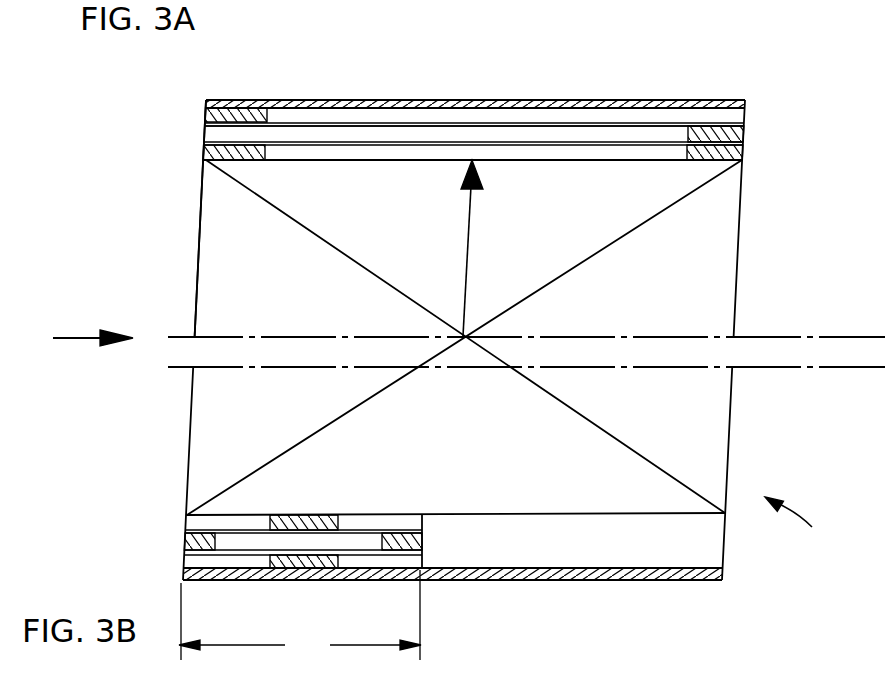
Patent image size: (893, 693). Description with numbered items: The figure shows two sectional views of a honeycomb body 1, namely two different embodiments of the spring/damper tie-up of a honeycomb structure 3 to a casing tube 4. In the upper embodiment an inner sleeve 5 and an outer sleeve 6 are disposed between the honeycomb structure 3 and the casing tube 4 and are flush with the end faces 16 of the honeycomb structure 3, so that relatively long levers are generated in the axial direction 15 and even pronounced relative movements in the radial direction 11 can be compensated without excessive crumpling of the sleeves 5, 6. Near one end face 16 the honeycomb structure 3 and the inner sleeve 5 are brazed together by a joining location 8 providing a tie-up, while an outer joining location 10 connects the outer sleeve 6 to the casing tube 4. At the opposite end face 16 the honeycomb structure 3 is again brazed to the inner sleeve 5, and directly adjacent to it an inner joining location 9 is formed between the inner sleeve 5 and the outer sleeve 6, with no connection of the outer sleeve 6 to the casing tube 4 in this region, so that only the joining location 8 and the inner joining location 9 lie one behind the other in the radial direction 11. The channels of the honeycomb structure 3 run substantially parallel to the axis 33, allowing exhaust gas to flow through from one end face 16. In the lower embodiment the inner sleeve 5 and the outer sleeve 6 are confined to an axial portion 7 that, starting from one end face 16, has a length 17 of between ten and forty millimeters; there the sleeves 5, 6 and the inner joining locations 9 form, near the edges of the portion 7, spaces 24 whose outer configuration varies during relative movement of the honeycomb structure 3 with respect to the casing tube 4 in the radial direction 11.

In FIG. 3A, the honeycomb body 1 is at (798, 521).
In FIG. 3A, the honeycomb structure 3 is at (736, 193).
In FIG. 3B, the honeycomb structure 3 is at (454, 546).
In FIG. 3A, the casing tube 4 is at (740, 99).
In FIG. 3B, the casing tube 4 is at (700, 579).
In FIG. 3A, the inner sleeve 5 is at (651, 142).
In FIG. 3B, the inner sleeve 5 is at (371, 530).
In FIG. 3A, the outer sleeve 6 is at (598, 125).
In FIG. 3B, the outer sleeve 6 is at (375, 568).
In FIG. 3B, the axial portion 7 is at (283, 513).
In FIG. 3A, the joining location providing a tie-up 8 is at (707, 170).
In FIG. 3A, the inner joining location 9 is at (717, 122).
In FIG. 3B, the inner joining location 9 is at (410, 532).
In FIG. 3A, the outer joining location 10 is at (247, 113).
In FIG. 3A, the radial direction 11 is at (472, 222).
In FIG. 3A, the axial direction 15 is at (80, 337).
In FIG. 3A, the end face 16 is at (200, 242).
In FIG. 3B, the length 17 is at (300, 615).
In FIG. 3A, the spaces 24 is at (401, 130).
In FIG. 3B, the spaces 24 is at (243, 545).
In FIG. 3A, the axis 33 is at (808, 335).